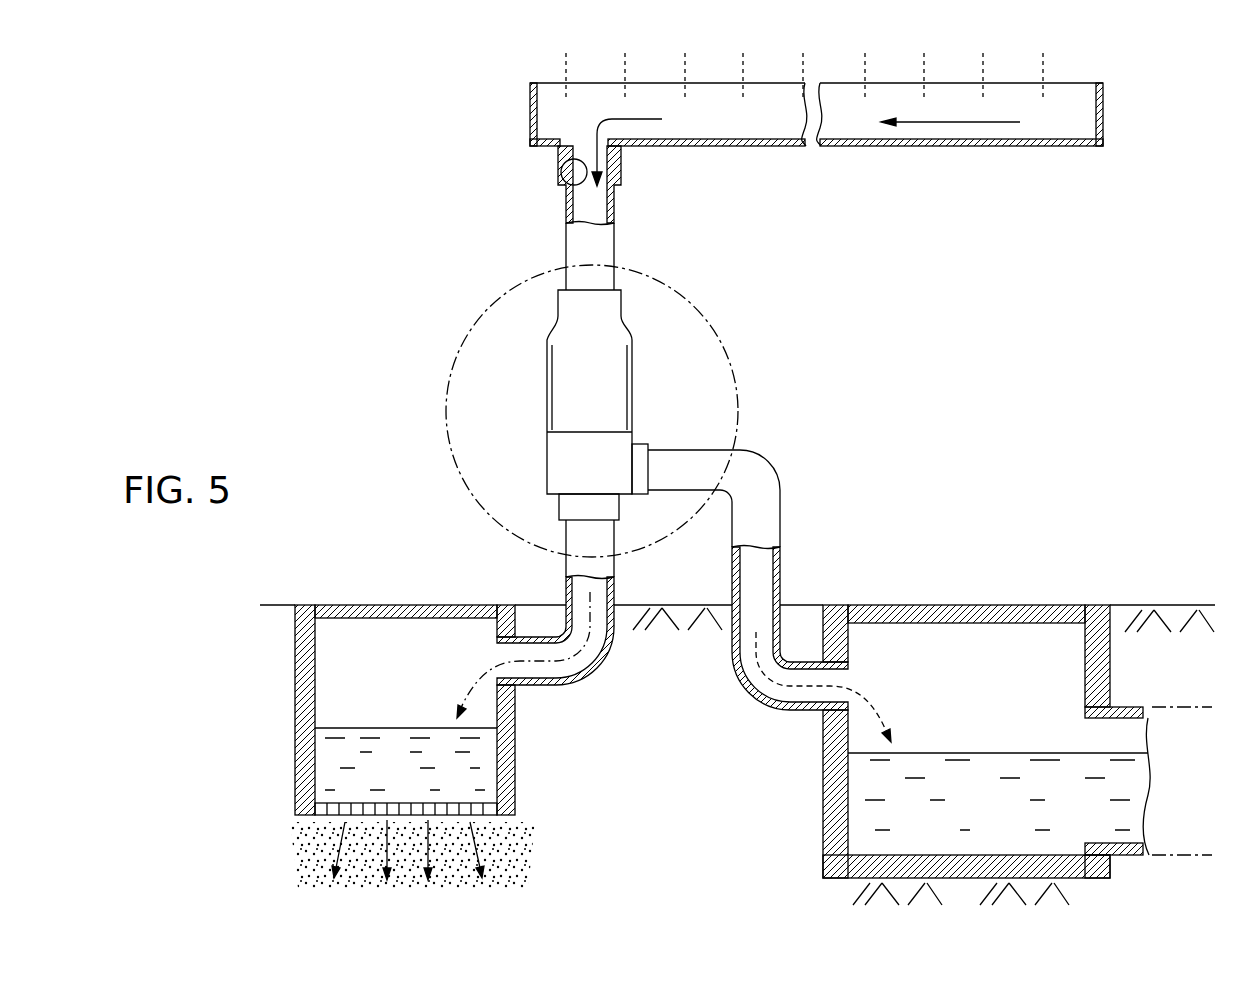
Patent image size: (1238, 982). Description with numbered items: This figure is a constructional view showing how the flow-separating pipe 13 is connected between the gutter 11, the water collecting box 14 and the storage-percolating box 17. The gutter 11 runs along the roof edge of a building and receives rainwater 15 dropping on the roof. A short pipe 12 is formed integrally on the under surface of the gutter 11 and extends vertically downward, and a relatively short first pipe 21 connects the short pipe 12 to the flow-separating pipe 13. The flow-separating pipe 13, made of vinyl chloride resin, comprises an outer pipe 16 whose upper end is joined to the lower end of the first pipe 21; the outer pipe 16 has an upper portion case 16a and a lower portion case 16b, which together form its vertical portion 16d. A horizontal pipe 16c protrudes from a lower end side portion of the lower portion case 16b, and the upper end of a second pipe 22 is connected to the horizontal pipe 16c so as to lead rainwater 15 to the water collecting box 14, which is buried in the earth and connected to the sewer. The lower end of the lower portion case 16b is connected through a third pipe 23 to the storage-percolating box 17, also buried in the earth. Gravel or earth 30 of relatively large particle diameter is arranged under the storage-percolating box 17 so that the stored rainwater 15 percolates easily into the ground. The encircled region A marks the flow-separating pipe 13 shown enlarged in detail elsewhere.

The gutter 11 is at (912, 148).
The short pipe 12 is at (566, 187).
The flow-separating pipe 13 is at (555, 423).
The water collecting box 14 is at (823, 755).
The rainwater 15 is at (567, 70).
The outer pipe 16 is at (538, 423).
The upper portion case 16a is at (545, 380).
The lower portion case 16b is at (547, 462).
The horizontal pipe 16c is at (643, 495).
The vertical portion 16d is at (632, 393).
The storage-percolating box 17 is at (297, 695).
The first pipe 21 is at (614, 205).
The second pipe 22 is at (780, 527).
The third pipe 23 is at (610, 660).
The gravel or earth 30 is at (523, 843).
The enlarged valve region A is at (722, 339).